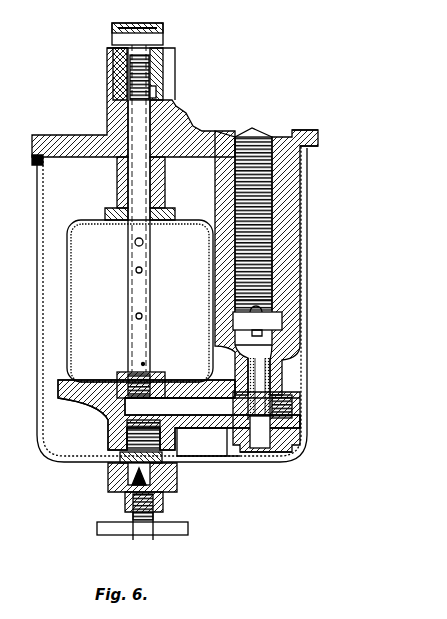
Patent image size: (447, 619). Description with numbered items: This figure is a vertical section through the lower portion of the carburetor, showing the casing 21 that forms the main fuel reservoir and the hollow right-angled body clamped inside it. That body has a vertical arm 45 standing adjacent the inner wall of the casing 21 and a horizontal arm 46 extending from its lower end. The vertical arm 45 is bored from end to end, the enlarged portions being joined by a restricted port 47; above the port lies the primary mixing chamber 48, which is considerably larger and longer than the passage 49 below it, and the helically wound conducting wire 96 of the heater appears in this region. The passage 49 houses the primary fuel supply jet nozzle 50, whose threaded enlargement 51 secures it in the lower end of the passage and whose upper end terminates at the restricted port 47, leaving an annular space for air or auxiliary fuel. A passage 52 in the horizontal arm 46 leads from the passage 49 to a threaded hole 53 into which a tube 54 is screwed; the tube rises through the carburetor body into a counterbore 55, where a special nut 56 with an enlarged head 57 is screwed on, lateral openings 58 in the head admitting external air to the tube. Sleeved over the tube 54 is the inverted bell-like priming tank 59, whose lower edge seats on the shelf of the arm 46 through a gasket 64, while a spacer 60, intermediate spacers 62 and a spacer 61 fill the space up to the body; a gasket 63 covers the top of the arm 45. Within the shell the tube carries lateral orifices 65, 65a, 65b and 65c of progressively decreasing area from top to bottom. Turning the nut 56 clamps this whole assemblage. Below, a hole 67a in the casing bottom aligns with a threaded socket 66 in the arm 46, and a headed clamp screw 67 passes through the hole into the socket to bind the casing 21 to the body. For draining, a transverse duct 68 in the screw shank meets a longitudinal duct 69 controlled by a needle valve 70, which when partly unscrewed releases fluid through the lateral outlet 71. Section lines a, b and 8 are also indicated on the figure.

The casing 21 is at (307, 287).
The vertical arm 45 is at (300, 262).
The horizontal arm 46 is at (202, 442).
The restricted port 47 is at (265, 370).
The primary mixing chamber 48 is at (260, 242).
The passage 49 is at (262, 382).
The primary fuel supply jet nozzle 50 is at (272, 400).
The threaded enlargement 51 is at (286, 460).
The passage 52 is at (217, 416).
The threaded hole 53 is at (160, 380).
The tube 54 is at (145, 296).
The counterbore 55 is at (156, 90).
The special nut 56 is at (165, 52).
The enlarged head 57 is at (112, 30).
The lateral openings 58 is at (163, 36).
The priming tank 59 is at (72, 270).
The spacer 60 is at (112, 182).
The spacer 61 is at (170, 218).
The intermediate spacers 62 is at (156, 192).
The gasket 63 is at (310, 164).
The gasket 64 is at (80, 386).
The lateral orifice 65 is at (143, 242).
The lateral orifice 65a is at (142, 270).
The lateral orifice 65b is at (142, 316).
The lateral orifice 65c is at (144, 363).
The threaded socket 66 is at (128, 432).
The clamp screw 67 is at (176, 486).
The hole 67a is at (123, 465).
The transverse duct 68 is at (190, 470).
The longitudinal duct 69 is at (122, 474).
The needle valve 70 is at (133, 516).
The outlet 71 is at (160, 506).
The conducting wire 96 is at (256, 298).
The section line a is at (345, 162).
The section line b is at (345, 228).
The section line 8 is at (330, 352).